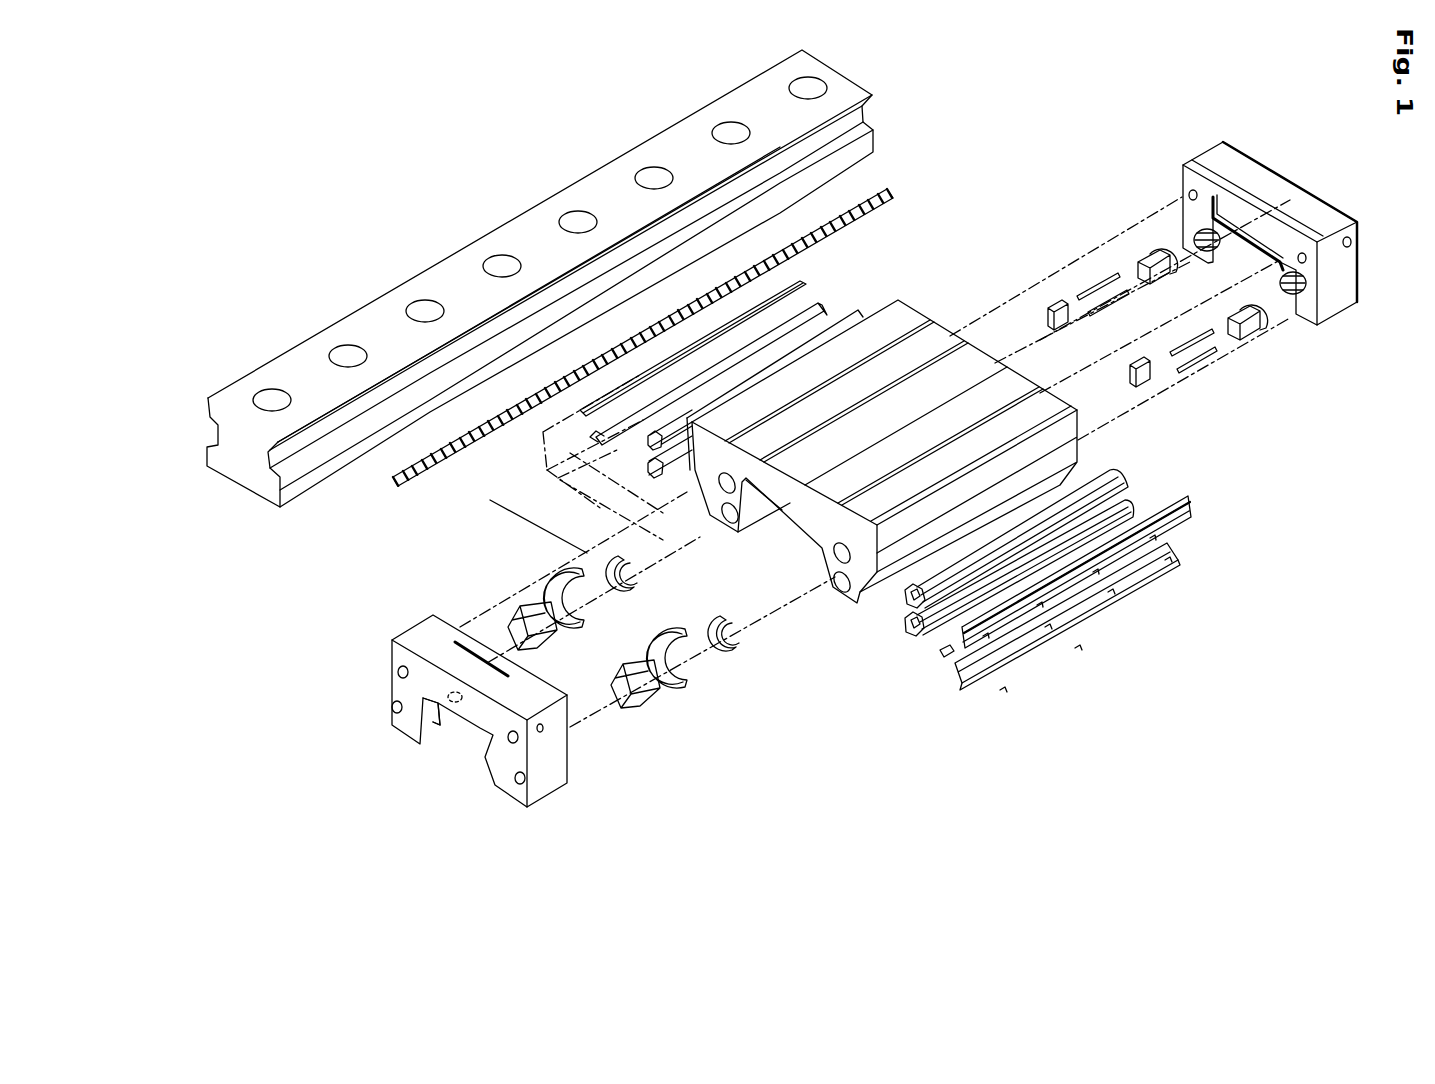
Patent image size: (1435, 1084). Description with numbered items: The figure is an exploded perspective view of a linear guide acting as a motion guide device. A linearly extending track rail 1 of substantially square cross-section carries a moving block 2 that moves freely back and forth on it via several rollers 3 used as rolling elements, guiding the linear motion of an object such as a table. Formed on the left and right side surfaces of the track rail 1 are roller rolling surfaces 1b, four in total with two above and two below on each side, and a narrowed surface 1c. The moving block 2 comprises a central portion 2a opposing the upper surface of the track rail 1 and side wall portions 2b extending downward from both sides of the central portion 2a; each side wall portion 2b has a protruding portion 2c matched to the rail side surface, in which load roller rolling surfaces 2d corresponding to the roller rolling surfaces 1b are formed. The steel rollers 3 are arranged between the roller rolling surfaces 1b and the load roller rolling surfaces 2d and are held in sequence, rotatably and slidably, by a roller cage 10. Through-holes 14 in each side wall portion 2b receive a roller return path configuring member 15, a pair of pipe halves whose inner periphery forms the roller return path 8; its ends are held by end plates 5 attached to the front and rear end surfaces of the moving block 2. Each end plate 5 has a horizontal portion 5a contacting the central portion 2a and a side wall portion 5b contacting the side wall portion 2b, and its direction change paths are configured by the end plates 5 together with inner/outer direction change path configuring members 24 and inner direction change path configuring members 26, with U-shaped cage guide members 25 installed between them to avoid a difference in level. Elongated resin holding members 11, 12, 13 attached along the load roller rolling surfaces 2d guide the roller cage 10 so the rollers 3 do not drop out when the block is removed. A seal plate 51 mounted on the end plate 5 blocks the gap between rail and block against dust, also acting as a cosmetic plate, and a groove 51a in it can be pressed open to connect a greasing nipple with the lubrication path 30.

The track rail 1 is at (315, 353).
The roller rolling surfaces 1b is at (207, 405).
The narrowed surface 1c is at (212, 424).
The moving block 2 is at (900, 302).
The central portion 2a is at (784, 480).
The side wall portions 2b is at (713, 440).
The protruding portion 2c is at (818, 550).
The load roller rolling surfaces 2d is at (823, 547).
The rollers 3 is at (866, 199).
The end plates 5 is at (557, 758).
The horizontal portion 5a is at (1293, 240).
The side wall portion 5b is at (1190, 183).
The roller return path 8 is at (885, 602).
The roller cage 10 is at (872, 200).
The first holding member 11 is at (1135, 572).
The second holding member 12 is at (826, 313).
The third holding member 13 is at (806, 283).
The through-holes 14 is at (730, 478).
The roller return path configuring member 15 is at (1128, 503).
The inner/outer direction change path configuring members 24 is at (650, 706).
The cage guide members 25 is at (707, 685).
The inner direction change path configuring members 26 is at (747, 643).
The lubrication path 30 is at (560, 850).
The seal plate 51 is at (405, 730).
The groove 51a is at (455, 705).